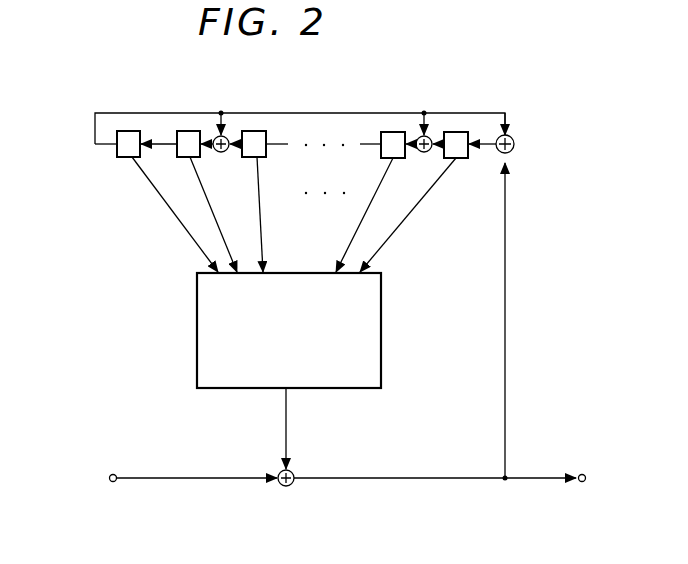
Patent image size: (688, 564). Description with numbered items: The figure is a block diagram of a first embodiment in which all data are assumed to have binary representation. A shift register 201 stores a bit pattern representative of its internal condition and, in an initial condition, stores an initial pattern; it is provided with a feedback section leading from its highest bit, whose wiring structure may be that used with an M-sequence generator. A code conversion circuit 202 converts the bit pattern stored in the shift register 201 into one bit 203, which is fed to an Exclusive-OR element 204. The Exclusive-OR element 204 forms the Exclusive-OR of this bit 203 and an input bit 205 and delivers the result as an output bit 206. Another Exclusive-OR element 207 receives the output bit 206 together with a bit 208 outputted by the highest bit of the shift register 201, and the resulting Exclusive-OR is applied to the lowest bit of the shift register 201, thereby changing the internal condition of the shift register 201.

The shift register 201 is at (103, 161).
The code conversion circuit 202 is at (381, 373).
The one bit 203 is at (286, 440).
The Exclusive-OR element 204 is at (288, 487).
The input bit 205 is at (167, 479).
The output bit 206 is at (506, 381).
The Exclusive-OR element 207 is at (512, 152).
The bit outputted by the highest bit of the shift register 208 is at (474, 113).